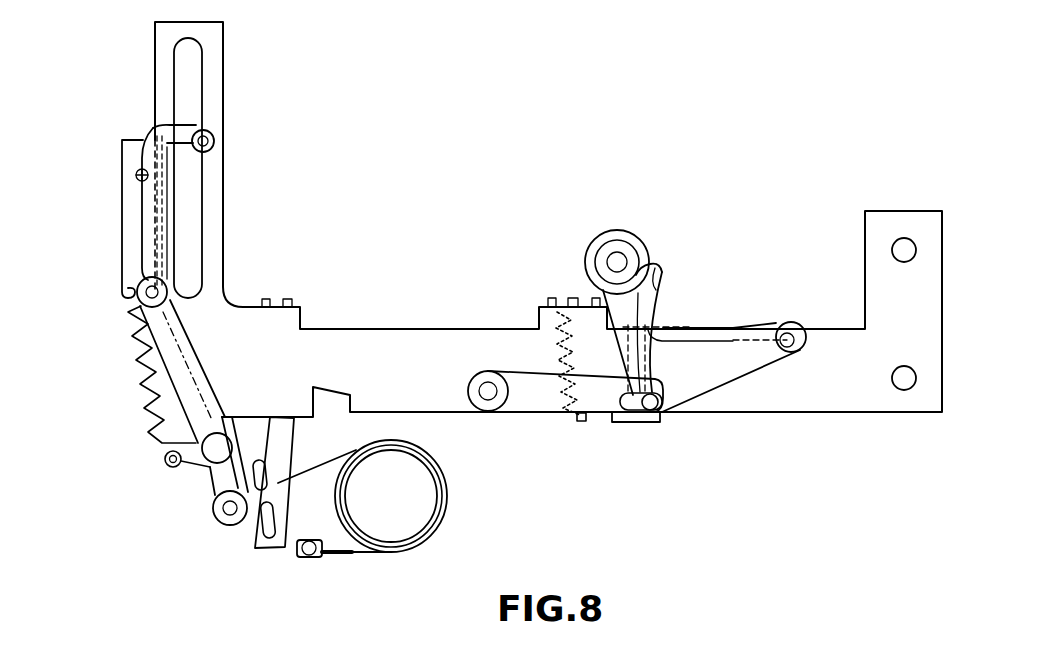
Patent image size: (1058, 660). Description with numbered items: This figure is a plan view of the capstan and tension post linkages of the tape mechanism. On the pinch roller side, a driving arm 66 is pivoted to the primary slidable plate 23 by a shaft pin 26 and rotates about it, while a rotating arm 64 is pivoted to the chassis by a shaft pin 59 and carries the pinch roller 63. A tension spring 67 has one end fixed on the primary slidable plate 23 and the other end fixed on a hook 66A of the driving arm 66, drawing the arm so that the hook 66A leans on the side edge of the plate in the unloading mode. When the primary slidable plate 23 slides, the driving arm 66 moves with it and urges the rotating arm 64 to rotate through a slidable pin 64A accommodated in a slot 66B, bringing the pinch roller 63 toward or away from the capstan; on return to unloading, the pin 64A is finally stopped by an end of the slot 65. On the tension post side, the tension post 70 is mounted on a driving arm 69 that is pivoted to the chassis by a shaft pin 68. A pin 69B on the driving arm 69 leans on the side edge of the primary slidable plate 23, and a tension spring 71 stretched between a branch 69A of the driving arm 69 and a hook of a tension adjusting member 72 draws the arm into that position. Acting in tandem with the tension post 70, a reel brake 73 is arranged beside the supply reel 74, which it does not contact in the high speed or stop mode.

The primary slidable plate 23 is at (330, 336).
The shaft pin 26 is at (484, 373).
The shaft pin 59 is at (783, 353).
The pinch roller 63 is at (620, 229).
The rotating arm 64 is at (712, 382).
The slidable pin 64A is at (660, 416).
The slot 65 is at (657, 286).
The driving arm 66 is at (548, 414).
The hook 66A is at (583, 412).
The slot 66B is at (630, 416).
The tension spring 67 is at (558, 363).
The shaft pin 68 is at (204, 476).
The driving arm 69 is at (157, 421).
The branch 69A is at (165, 462).
The pin 69B is at (138, 266).
The tension post 70 is at (157, 127).
The tension spring 71 is at (138, 376).
The tension adjusting member 72 is at (127, 213).
The reel brake 73 is at (351, 557).
The supply reel 74 is at (388, 530).